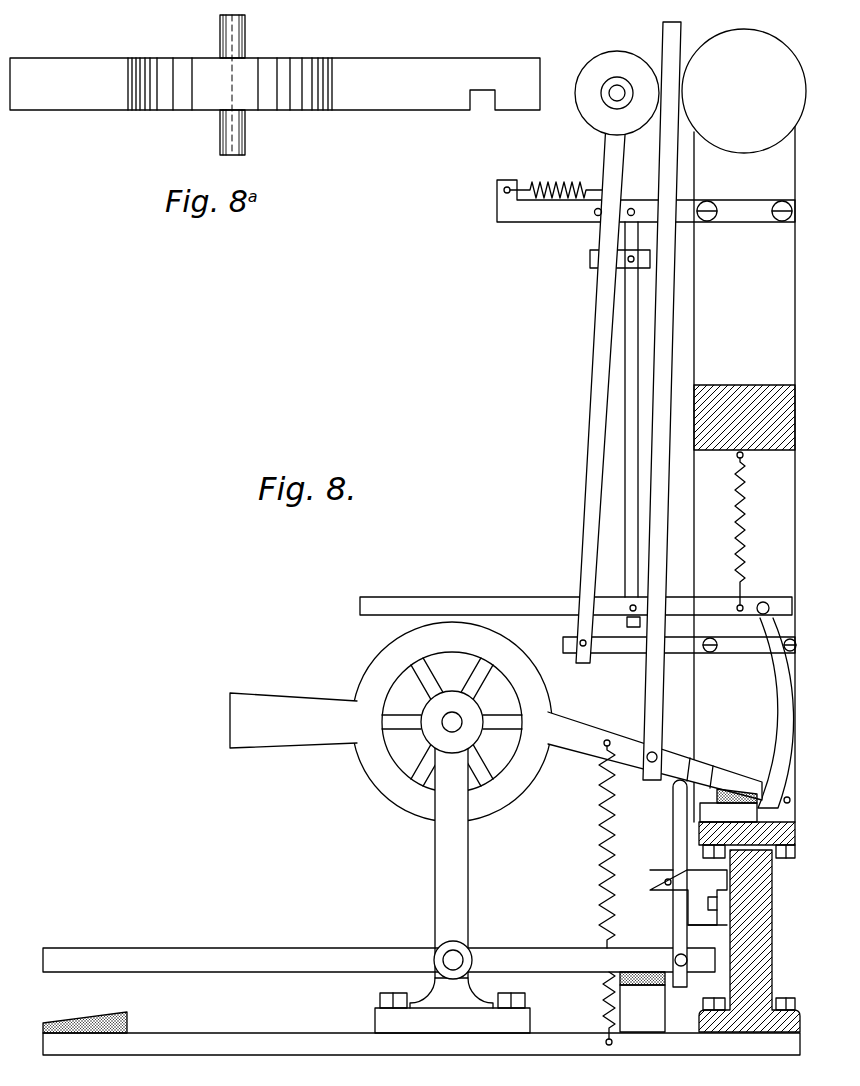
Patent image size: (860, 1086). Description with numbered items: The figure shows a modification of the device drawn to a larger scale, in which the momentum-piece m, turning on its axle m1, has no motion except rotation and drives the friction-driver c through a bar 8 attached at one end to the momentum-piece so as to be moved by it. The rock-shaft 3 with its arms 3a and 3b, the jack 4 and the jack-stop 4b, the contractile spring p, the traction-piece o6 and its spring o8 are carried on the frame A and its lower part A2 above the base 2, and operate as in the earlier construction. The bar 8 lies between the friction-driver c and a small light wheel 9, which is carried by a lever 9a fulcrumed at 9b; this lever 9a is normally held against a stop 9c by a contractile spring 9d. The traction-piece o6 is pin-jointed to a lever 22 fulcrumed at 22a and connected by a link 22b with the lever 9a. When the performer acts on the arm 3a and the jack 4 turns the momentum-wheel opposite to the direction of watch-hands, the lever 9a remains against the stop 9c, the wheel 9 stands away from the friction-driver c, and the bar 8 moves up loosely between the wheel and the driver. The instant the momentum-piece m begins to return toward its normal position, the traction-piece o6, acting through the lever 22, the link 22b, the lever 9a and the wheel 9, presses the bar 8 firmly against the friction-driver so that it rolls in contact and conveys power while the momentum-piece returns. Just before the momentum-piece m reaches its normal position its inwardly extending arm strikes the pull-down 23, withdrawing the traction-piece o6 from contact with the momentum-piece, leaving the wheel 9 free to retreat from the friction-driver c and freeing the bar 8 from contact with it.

In FIG. 8A, the momentum-piece m is at (275, 84).
In FIG. 8, the momentum-piece m is at (391, 722).
In FIG. 8A, the axle m1 is at (245, 30).
In FIG. 8, the axle m1 is at (453, 735).
In FIG. 8, the small light wheel 9 is at (617, 60).
In FIG. 8, the lever 9a is at (598, 335).
In FIG. 8, the fulcrum 9b is at (580, 647).
In FIG. 8, the stop 9c is at (595, 215).
In FIG. 8, the contractile spring 9d is at (540, 184).
In FIG. 8, the lever 22 is at (630, 478).
In FIG. 8, the fulcrum 22a is at (631, 208).
In FIG. 8, the link 22b is at (590, 255).
In FIG. 8, the frame A is at (744, 473).
In FIG. 8, the frame part A2 is at (773, 893).
In FIG. 8, the friction-driver c is at (780, 52).
In FIG. 8, the traction-piece o6 is at (380, 598).
In FIG. 8, the spring o8 is at (750, 497).
In FIG. 8, the bar 8 is at (648, 683).
In FIG. 8, the pull-down 23 is at (778, 712).
In FIG. 8, the contractile spring p is at (598, 813).
In FIG. 8, the jack 4 is at (680, 818).
In FIG. 8, the jack-stop 4b is at (700, 918).
In FIG. 8, the rock-shaft 3 is at (444, 955).
In FIG. 8, the arm 3a is at (103, 958).
In FIG. 8, the arm 3b is at (487, 958).
In FIG. 8, the base plate 2 is at (220, 1037).